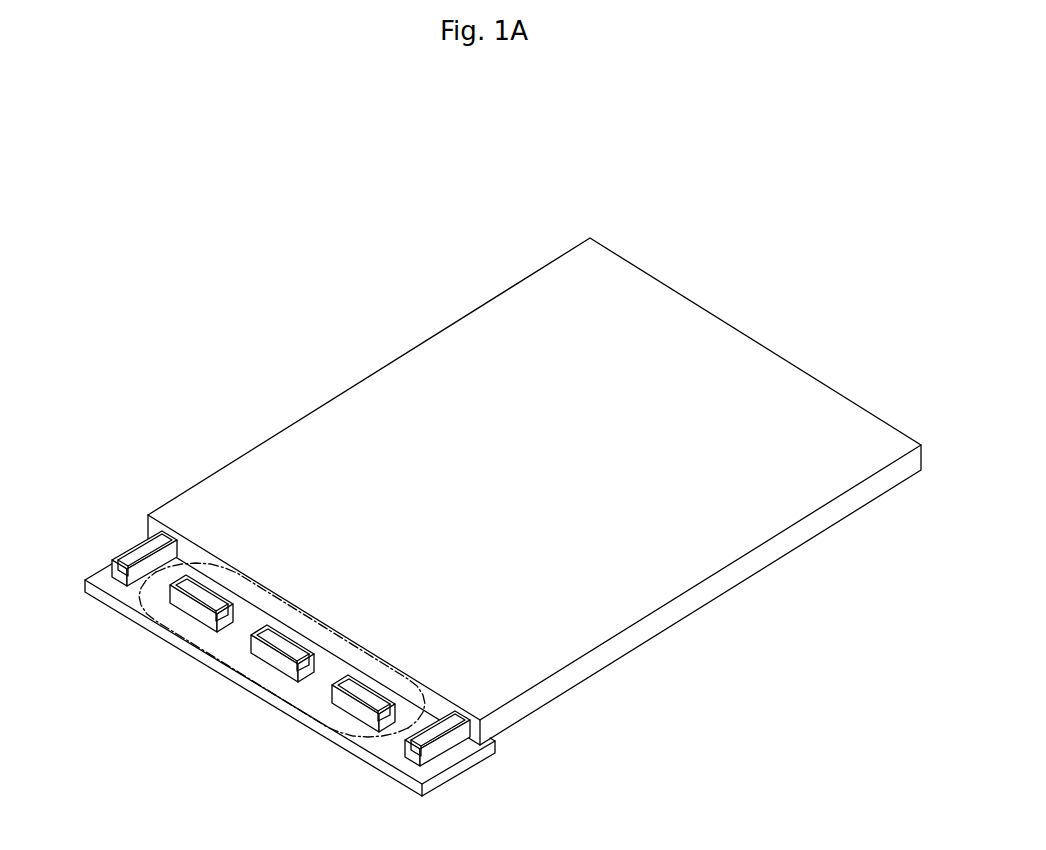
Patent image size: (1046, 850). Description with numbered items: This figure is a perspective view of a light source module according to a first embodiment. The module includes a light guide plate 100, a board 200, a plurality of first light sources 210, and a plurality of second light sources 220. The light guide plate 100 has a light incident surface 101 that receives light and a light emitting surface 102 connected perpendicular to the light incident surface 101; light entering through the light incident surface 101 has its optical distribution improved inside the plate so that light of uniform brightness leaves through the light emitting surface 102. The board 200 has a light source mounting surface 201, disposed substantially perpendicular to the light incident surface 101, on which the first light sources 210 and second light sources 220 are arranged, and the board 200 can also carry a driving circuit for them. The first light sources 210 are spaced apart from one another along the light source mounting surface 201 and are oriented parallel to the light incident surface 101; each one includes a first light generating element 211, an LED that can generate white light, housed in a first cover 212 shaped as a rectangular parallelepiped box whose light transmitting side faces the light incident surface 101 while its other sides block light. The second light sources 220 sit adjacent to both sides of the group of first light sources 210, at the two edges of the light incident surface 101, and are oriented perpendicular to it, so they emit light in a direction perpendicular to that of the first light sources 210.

The light guide plate 100 is at (534, 491).
The light incident surface 101 is at (420, 693).
The light emitting surface 102 is at (490, 313).
The board 200 is at (298, 658).
The light source mounting surface 201 is at (98, 575).
The first light sources 210 is at (283, 588).
The first light generating element 211 is at (382, 738).
The first cover 212 is at (372, 690).
The second light sources 220 is at (120, 532).